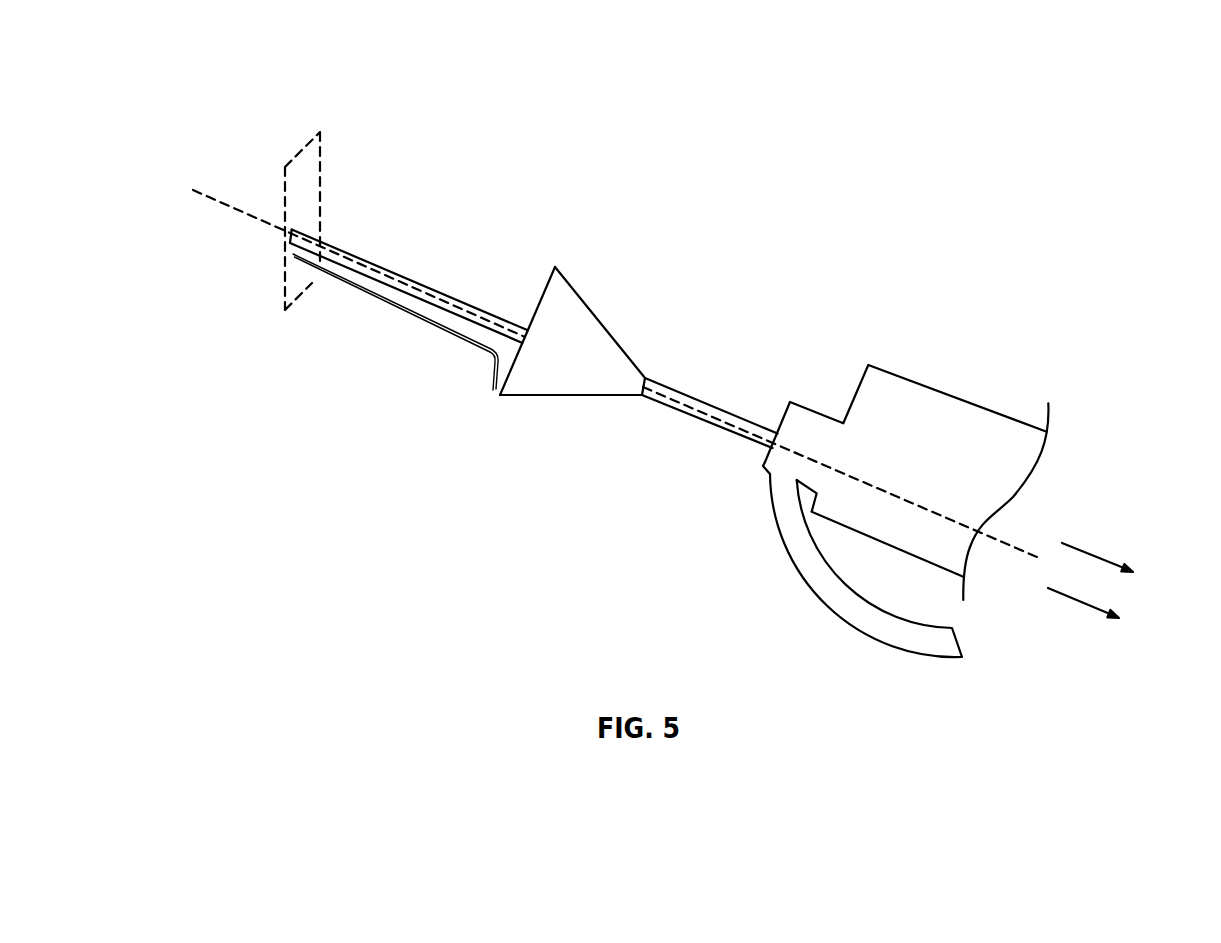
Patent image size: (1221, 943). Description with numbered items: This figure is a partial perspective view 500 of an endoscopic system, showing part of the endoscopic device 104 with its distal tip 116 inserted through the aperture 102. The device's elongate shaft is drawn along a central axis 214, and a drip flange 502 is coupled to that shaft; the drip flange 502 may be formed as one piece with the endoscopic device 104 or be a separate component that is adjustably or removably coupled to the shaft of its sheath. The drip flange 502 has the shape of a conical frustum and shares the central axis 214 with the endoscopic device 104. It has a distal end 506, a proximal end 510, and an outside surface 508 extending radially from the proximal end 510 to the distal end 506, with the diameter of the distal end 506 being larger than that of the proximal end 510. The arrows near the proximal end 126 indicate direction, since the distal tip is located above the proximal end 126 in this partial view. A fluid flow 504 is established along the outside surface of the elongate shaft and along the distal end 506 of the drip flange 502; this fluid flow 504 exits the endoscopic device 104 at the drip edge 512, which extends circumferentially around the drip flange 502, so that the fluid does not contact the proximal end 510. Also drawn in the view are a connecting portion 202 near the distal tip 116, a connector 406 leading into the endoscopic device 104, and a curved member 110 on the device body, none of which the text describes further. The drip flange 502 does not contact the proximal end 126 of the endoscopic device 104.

The partial perspective view 500 is at (209, 63).
The aperture 102 is at (283, 189).
The central axis 214 is at (208, 198).
The distal tip 116 is at (295, 227).
The sleeve / ferrule 202 is at (393, 268).
The fluid flow 504 is at (490, 363).
The drip flange 502 is at (583, 259).
The distal end of drip flange 506 is at (519, 279).
The outside surface of drip flange 508 is at (602, 350).
The drip edge 512 is at (497, 407).
The proximal end of drip flange 510 is at (641, 408).
The connector stub 406 is at (775, 415).
The endoscopic device 104 is at (744, 346).
The curved mount 110 is at (797, 577).
The proximal end 126 is at (1098, 582).